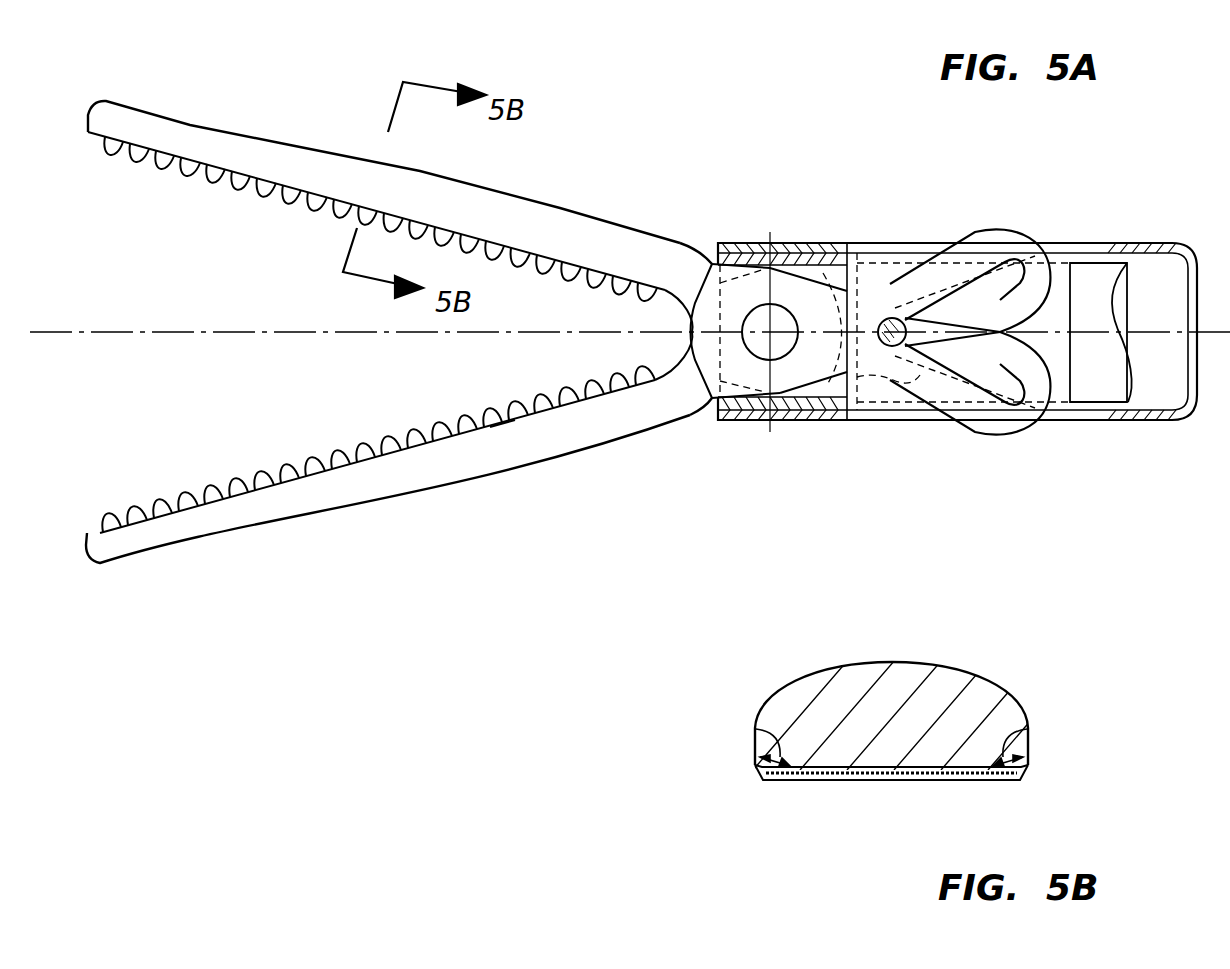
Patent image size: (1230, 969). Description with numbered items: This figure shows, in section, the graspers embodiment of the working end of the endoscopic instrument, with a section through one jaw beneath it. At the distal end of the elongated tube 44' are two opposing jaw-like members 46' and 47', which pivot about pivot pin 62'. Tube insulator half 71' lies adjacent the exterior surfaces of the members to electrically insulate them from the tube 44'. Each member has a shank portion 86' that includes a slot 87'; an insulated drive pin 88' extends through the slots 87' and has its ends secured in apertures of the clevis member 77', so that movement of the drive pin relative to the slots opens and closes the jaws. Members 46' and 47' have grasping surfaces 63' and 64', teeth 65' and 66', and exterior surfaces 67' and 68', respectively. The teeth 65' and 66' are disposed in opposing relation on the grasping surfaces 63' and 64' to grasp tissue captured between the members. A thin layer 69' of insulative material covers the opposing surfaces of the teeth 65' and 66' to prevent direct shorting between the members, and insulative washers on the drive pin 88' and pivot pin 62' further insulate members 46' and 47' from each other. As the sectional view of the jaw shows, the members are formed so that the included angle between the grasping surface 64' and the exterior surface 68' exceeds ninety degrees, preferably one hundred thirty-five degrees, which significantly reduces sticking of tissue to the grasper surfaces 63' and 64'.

In FIG. 5A, the elongated tube 44' is at (966, 325).
In FIG. 5A, the jaw-like member 46' is at (400, 238).
In FIG. 5B, the jaw-like member 46' is at (894, 722).
In FIG. 5A, the jaw-like member 47' is at (399, 463).
In FIG. 5A, the pivot pin 62' is at (774, 306).
In FIG. 5A, the grasping surface 63' is at (377, 449).
In FIG. 5A, the grasping surface 64' is at (376, 216).
In FIG. 5B, the grasping surface 64' is at (891, 805).
In FIG. 5A, the teeth 65' is at (592, 321).
In FIG. 5A, the teeth 66' is at (476, 395).
In FIG. 5A, the exterior surface 67' is at (399, 480).
In FIG. 5A, the exterior surface 68' is at (400, 180).
In FIG. 5B, the exterior surface 68' is at (891, 681).
In FIG. 5B, the thin layer of insulative material 69' is at (891, 805).
In FIG. 5A, the tube insulator half 71' is at (796, 306).
In FIG. 5A, the clevis member 77' is at (1092, 287).
In FIG. 5A, the shank portion 86' is at (958, 323).
In FIG. 5A, the slot 87' is at (987, 324).
In FIG. 5A, the insulated drive pin 88' is at (871, 268).